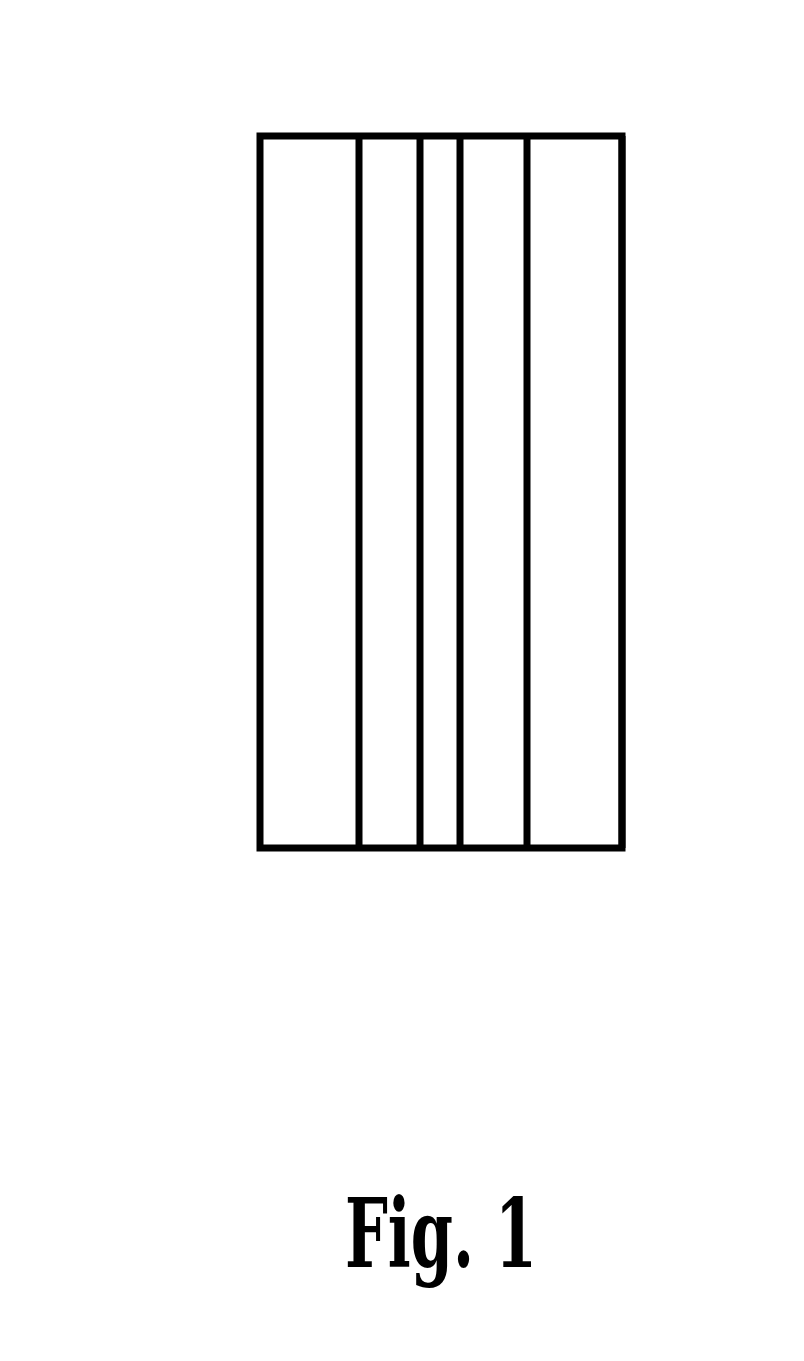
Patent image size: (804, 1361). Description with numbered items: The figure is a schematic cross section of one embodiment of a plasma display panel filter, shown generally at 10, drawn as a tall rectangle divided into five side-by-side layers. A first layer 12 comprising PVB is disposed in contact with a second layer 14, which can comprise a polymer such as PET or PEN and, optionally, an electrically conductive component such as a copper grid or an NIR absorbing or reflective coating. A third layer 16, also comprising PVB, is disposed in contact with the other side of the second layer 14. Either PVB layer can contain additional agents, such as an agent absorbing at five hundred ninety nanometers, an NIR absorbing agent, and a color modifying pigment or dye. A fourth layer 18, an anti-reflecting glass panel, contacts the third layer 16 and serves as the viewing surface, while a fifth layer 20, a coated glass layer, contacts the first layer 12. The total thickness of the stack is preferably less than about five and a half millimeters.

The PDP filter 10 is at (202, 172).
The first layer 12 is at (488, 812).
The second layer 14 is at (437, 803).
The third layer 16 is at (392, 812).
The fourth layer 18 is at (302, 808).
The fifth layer 20 is at (585, 805).